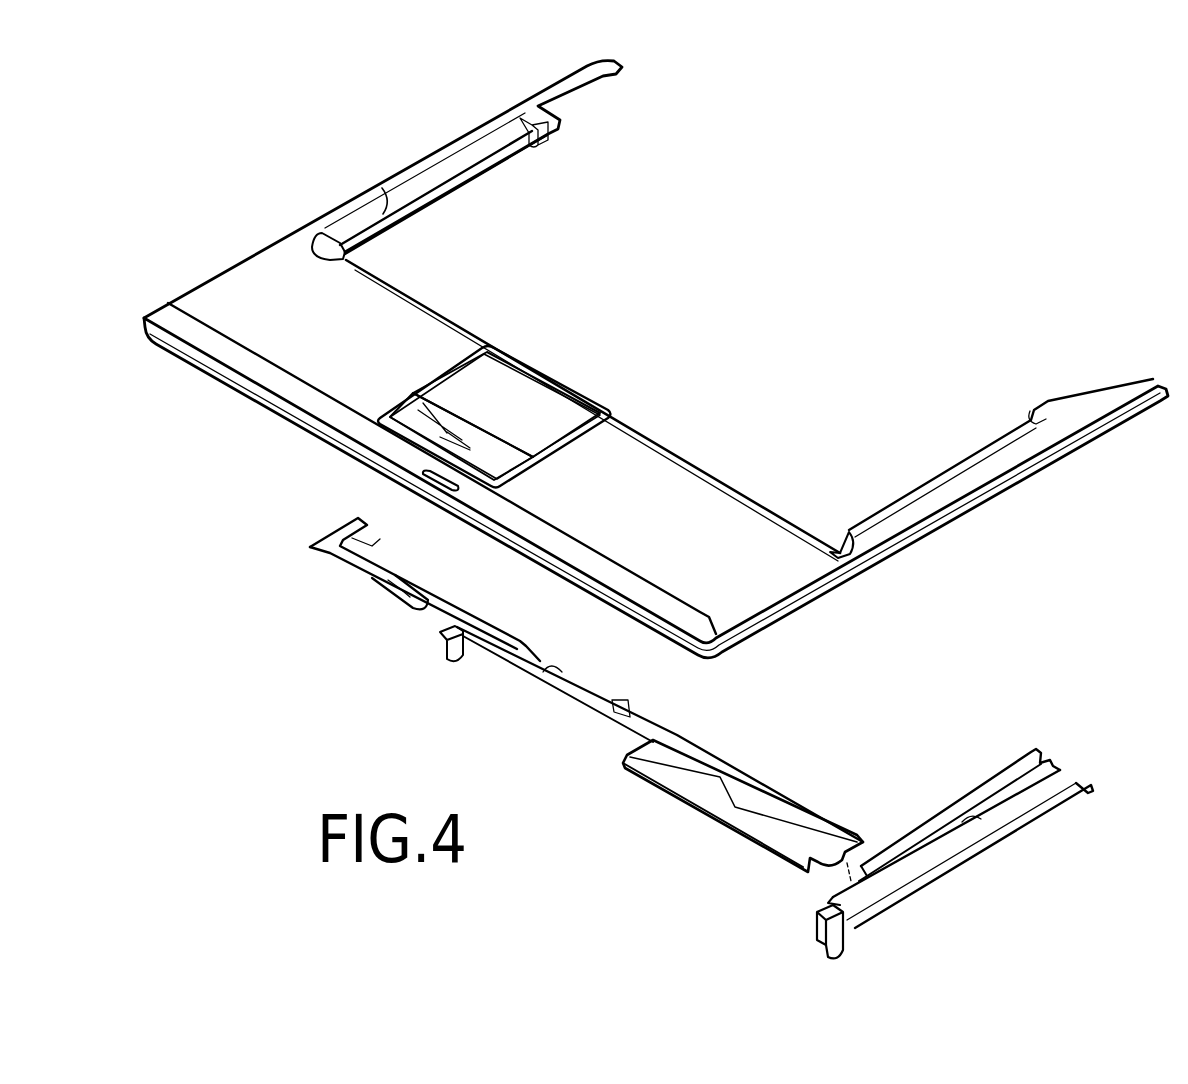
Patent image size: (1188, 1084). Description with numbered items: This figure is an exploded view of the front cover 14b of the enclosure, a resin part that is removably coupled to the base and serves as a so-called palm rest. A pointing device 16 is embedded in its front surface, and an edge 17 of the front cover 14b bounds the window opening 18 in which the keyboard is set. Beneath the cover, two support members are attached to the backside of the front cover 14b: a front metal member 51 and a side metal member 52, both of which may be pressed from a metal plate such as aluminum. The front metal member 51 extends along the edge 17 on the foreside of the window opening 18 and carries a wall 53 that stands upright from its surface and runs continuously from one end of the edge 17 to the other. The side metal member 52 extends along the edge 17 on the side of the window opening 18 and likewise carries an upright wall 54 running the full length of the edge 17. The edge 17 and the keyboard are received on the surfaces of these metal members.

The front cover 14b is at (1123, 384).
The pointing device 16 is at (442, 388).
The edge 17 is at (447, 194).
The window opening 18 is at (382, 188).
The front metal member 51 is at (318, 549).
The side metal member 52 is at (1093, 788).
The wall 53 is at (571, 680).
The wall 54 is at (972, 820).